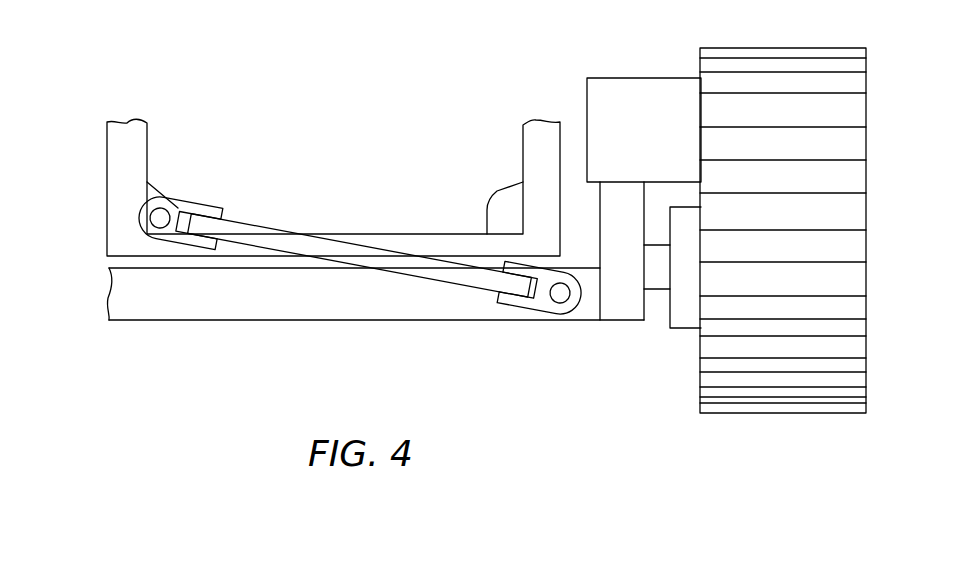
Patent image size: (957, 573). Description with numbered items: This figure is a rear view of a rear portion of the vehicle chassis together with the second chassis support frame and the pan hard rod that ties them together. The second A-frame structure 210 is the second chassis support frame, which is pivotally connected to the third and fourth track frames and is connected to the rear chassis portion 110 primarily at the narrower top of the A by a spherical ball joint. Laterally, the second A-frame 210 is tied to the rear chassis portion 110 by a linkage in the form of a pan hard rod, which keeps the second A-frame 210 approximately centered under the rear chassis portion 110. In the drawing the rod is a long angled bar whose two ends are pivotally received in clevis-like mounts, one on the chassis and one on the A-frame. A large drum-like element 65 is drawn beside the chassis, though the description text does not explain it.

The rear chassis portion 110 is at (100, 166).
The second A-frame structure 210 is at (187, 333).
The roller 65 is at (783, 424).